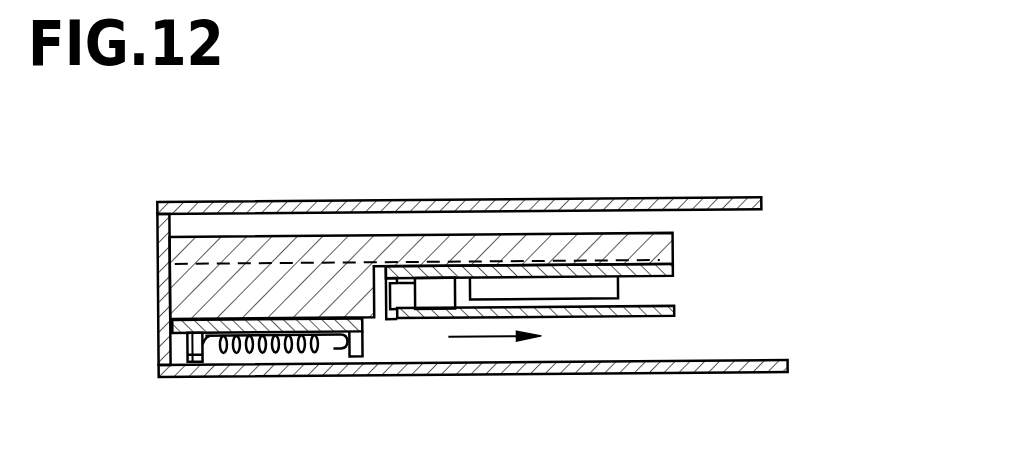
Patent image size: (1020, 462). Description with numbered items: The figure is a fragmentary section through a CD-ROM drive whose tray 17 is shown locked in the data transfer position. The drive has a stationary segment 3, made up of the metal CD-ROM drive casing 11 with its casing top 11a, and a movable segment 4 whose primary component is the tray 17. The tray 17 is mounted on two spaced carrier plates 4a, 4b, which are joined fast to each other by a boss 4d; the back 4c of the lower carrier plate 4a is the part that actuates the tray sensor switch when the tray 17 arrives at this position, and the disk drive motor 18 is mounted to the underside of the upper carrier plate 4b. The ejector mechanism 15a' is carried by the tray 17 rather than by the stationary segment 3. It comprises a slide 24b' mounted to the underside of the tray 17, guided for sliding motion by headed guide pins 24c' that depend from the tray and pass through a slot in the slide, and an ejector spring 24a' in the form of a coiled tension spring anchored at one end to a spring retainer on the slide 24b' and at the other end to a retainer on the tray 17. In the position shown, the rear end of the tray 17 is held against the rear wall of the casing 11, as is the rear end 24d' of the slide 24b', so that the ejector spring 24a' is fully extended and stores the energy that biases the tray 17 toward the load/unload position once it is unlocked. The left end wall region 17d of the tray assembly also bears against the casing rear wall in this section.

The stationary segment 3 is at (711, 189).
The movable segment 4 is at (487, 232).
The carrier plate 4a is at (675, 310).
The carrier plate 4b is at (675, 273).
The back of the carrier plate 4c is at (365, 276).
The boss 4d is at (437, 292).
The CD-ROM drive casing 11 is at (509, 283).
The casing top 11a is at (307, 205).
The ejector mechanism 15a' is at (473, 394).
The tray 17 is at (633, 236).
The slider end wall 17d is at (158, 264).
The disk drive motor 18 is at (552, 295).
The ejector spring 24a' is at (293, 375).
The slide 24b' is at (238, 394).
The headed guide pins 24c' is at (275, 384).
The rear end of the slide 24d' is at (176, 384).